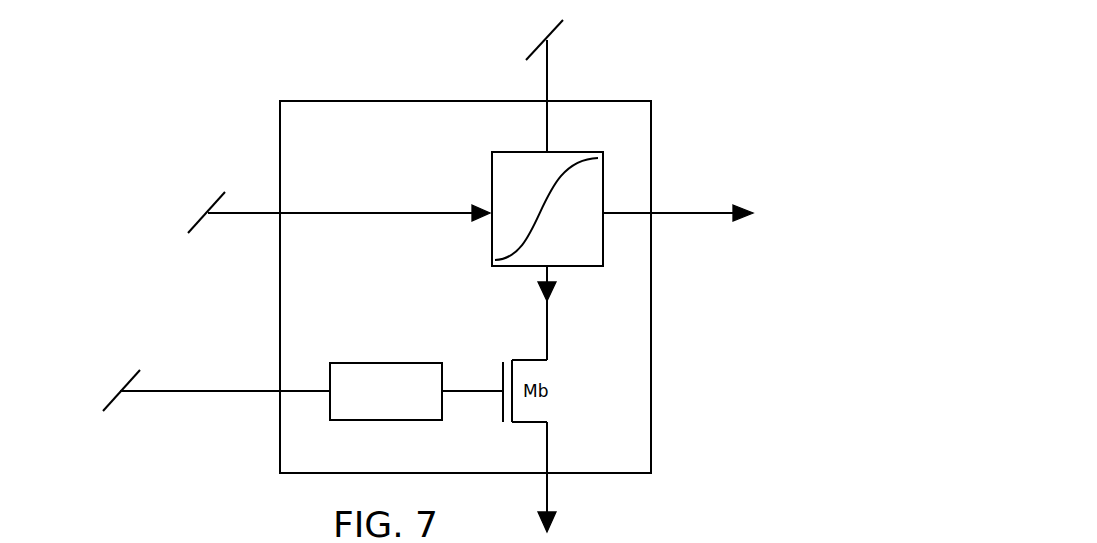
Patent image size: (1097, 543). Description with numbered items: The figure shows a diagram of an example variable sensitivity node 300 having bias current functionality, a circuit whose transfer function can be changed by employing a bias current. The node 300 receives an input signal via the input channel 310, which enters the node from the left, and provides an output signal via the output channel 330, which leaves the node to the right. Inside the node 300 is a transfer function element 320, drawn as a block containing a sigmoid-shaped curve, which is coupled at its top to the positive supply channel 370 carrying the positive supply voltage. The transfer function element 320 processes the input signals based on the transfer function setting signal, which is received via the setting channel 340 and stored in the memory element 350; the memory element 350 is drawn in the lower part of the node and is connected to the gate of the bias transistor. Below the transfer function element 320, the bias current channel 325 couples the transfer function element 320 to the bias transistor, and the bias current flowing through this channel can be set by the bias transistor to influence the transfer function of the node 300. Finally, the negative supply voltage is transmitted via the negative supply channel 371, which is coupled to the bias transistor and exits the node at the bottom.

The variable sensitivity node 300 is at (420, 128).
The input channel 310 is at (262, 217).
The transfer function element 320 is at (597, 259).
The bias current channel 325 is at (549, 272).
The output channel 330 is at (670, 217).
The setting channel 340 is at (220, 393).
The memory element 350 is at (381, 409).
The positive supply channel 370 is at (549, 82).
The negative supply channel 371 is at (549, 483).